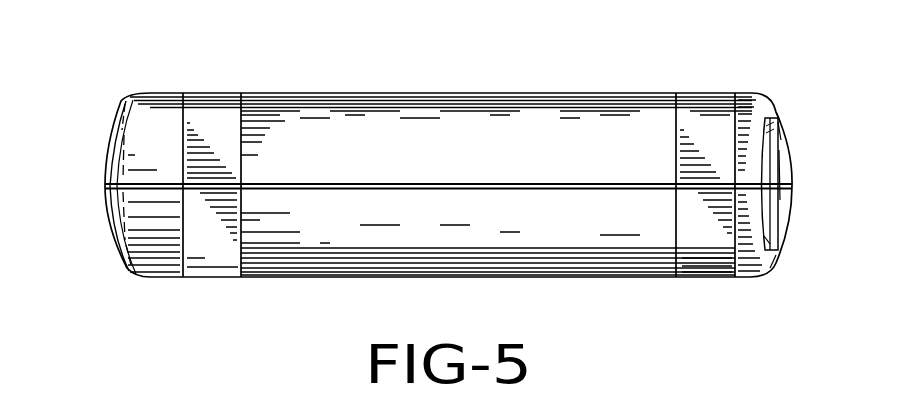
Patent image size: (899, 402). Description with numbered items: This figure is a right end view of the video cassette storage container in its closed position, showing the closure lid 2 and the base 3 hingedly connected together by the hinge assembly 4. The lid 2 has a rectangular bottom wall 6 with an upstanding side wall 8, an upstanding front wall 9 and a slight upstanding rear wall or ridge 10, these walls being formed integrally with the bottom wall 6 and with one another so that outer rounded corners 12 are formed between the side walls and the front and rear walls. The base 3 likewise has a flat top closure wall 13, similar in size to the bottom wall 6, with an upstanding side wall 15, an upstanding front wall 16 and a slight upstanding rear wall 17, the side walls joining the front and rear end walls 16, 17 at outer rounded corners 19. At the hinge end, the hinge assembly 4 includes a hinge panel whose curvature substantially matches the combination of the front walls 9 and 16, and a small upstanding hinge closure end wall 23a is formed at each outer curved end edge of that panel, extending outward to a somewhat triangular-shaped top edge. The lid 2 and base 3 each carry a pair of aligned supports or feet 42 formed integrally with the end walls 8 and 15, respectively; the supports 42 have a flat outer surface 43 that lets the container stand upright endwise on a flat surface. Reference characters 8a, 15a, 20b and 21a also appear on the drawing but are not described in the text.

The closure lid 2 is at (144, 281).
The base 3 is at (143, 96).
The hinge assembly 4 is at (797, 115).
The bottom wall 6 is at (527, 278).
The side wall 8 is at (490, 222).
The cap inner wall 8a is at (767, 241).
The front wall 9 is at (112, 247).
The rear wall 10 is at (773, 262).
The outer rounded corners 12 is at (113, 210).
The top closure wall 13 is at (452, 93).
The side wall 15 is at (368, 135).
The cap upper section 15a is at (767, 143).
The front wall 16 is at (115, 118).
The rear wall 17 is at (783, 126).
The outer rounded corners 19 is at (112, 160).
The lower half section 20b is at (441, 186).
The parting line 21a is at (512, 182).
The hinge closure end wall 23a is at (778, 188).
The supports 42 is at (207, 117).
The flat outer surface 43 is at (230, 137).